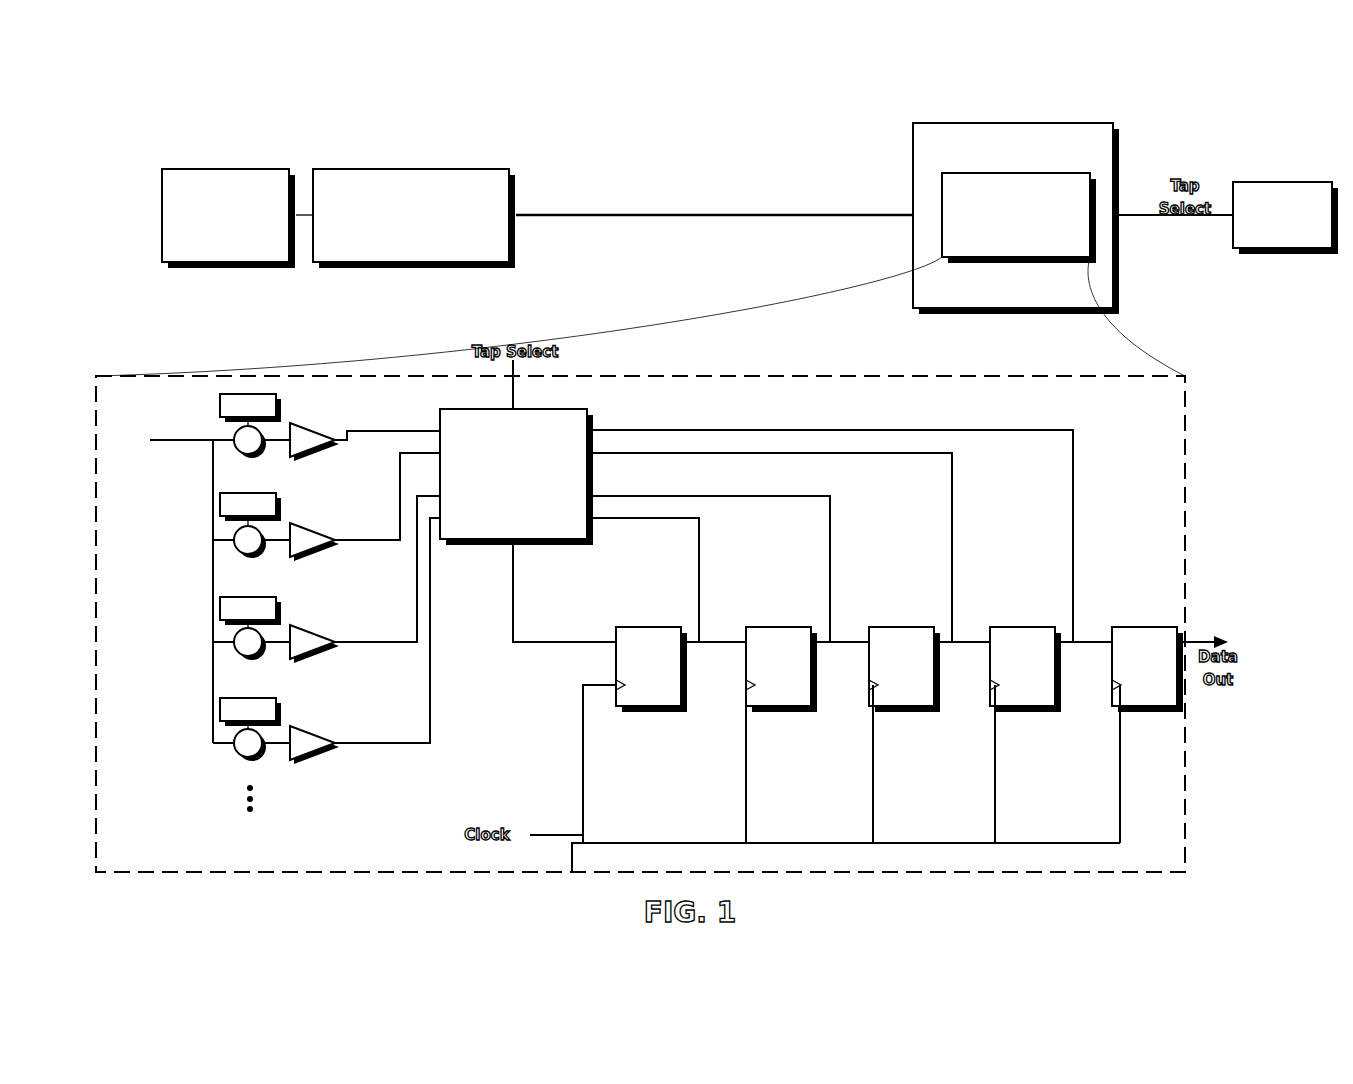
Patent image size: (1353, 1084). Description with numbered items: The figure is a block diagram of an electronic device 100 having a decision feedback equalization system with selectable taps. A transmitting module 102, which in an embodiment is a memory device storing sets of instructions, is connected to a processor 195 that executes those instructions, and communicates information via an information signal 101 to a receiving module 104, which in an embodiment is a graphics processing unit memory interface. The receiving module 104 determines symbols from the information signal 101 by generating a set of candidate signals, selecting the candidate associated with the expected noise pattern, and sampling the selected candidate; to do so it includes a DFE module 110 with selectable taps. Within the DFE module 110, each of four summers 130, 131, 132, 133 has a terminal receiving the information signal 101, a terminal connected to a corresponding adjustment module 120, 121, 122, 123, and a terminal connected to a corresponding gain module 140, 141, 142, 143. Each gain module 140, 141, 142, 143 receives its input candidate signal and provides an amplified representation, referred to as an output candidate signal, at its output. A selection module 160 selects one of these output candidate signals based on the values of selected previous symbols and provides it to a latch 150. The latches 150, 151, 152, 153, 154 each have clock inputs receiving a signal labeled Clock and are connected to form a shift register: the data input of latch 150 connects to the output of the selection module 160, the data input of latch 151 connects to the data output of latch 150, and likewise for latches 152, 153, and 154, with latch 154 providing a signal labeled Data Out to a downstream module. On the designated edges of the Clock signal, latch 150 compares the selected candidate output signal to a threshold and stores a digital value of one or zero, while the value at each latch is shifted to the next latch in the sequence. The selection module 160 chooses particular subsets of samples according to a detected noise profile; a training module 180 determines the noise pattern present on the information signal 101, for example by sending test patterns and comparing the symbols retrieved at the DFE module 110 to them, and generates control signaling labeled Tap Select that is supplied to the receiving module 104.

The electronic device 100 is at (203, 897).
The information signal 101 is at (714, 189).
The transmitting module 102 is at (414, 205).
The receiving module 104 is at (1016, 201).
The DFE module 110 is at (1019, 198).
The adjustment module 120 is at (198, 406).
The adjustment module 121 is at (210, 500).
The adjustment module 122 is at (210, 603).
The adjustment module 123 is at (210, 703).
The summer 130 is at (198, 435).
The summer 131 is at (198, 535).
The summer 132 is at (198, 638).
The summer 133 is at (198, 738).
The gain module 140 is at (351, 428).
The gain module 141 is at (351, 507).
The gain module 142 is at (351, 579).
The gain module 143 is at (351, 641).
The latch 150 is at (644, 699).
The latch 151 is at (775, 699).
The latch 152 is at (897, 700).
The latch 153 is at (1019, 699).
The latch 154 is at (1141, 696).
The selection module 160 is at (577, 442).
The training module 180 is at (1272, 202).
The processor 195 is at (210, 203).